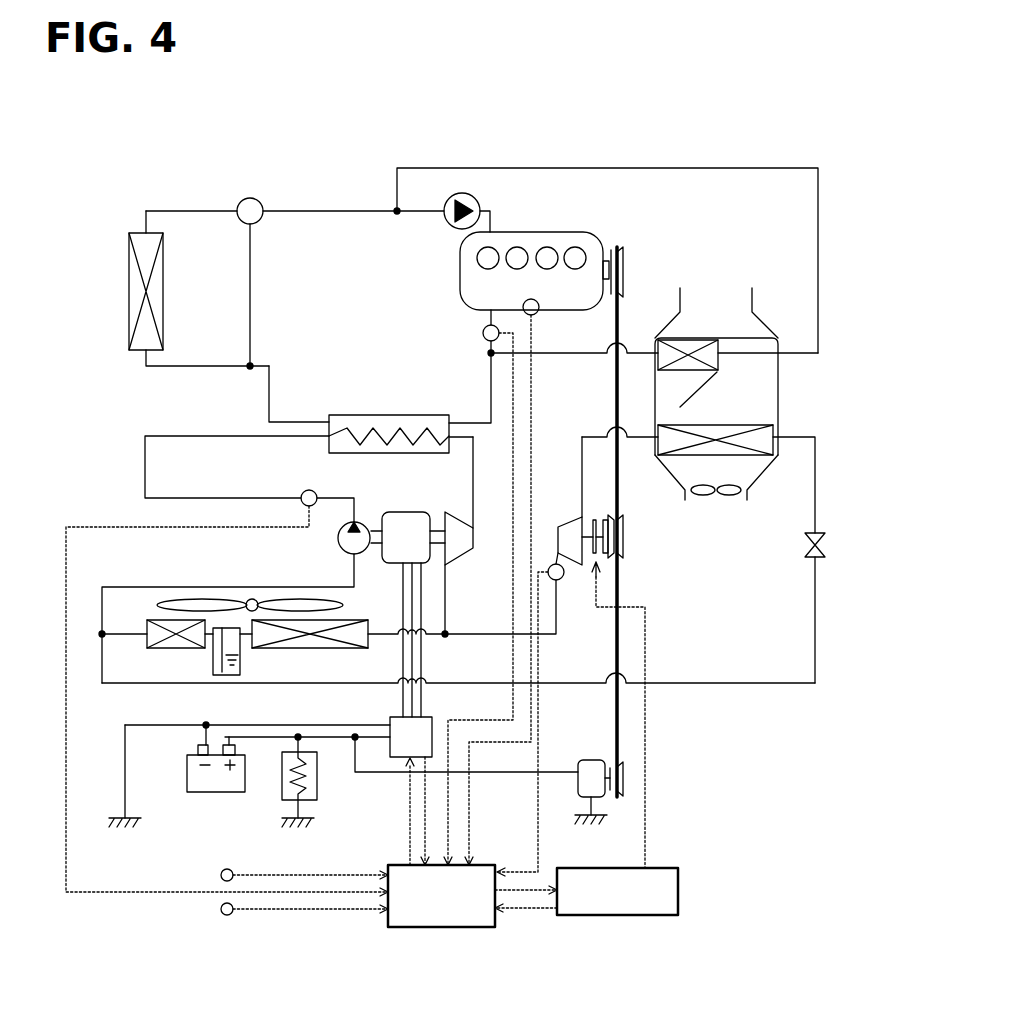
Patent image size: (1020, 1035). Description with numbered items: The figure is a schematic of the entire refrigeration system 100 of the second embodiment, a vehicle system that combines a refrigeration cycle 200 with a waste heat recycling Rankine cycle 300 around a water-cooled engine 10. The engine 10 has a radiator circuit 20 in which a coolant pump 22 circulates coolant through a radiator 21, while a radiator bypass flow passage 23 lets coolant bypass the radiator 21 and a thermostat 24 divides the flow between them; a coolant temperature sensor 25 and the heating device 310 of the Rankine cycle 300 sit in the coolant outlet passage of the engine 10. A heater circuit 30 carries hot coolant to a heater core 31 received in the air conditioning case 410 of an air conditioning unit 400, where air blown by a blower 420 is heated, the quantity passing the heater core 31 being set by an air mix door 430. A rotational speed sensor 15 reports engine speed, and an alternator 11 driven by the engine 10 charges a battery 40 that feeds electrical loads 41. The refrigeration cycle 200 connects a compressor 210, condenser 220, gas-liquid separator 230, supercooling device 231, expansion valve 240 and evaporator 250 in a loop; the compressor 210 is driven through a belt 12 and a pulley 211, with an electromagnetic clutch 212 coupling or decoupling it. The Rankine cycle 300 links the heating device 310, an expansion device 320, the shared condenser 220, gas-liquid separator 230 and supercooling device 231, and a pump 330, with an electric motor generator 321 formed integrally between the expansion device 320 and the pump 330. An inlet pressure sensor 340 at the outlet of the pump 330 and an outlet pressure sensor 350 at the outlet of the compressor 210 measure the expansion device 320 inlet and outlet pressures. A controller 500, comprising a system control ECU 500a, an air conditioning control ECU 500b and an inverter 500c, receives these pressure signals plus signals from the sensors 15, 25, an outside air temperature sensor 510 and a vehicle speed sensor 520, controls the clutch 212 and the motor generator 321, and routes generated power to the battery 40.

The engine 10 is at (460, 258).
The alternator 11 is at (588, 759).
The belt 12 is at (615, 372).
The rotational speed sensor 15 is at (535, 315).
The radiator circuit 20 is at (338, 205).
The radiator 21 is at (128, 284).
The coolant pump 22 is at (475, 194).
The radiator bypass flow passage 23 is at (253, 286).
The thermostat 24 is at (250, 198).
The coolant temperature sensor 25 is at (482, 333).
The heater circuit 30 is at (668, 162).
The heater core 31 is at (678, 340).
The battery 40 is at (200, 793).
The electrical loads 41 is at (318, 778).
The refrigeration system 100 is at (132, 434).
The refrigeration cycle 200 is at (575, 436).
The compressor 210 is at (566, 518).
The pulley 211 is at (624, 538).
The electromagnetic clutch 212 is at (600, 518).
The condenser 220 is at (320, 649).
The gas-liquid separator 230 is at (241, 662).
The supercooling device 231 is at (177, 650).
The expansion valve 240 is at (826, 540).
The evaporator 250 is at (748, 457).
The Rankine cycle 300 is at (193, 425).
The heating device 310 is at (388, 414).
The expansion device 320 is at (455, 511).
The electric motor generator 321 is at (398, 511).
The pump 330 is at (338, 548).
The inlet pressure sensor 340 is at (303, 492).
The outlet pressure sensor 350 is at (560, 582).
The air conditioning unit 400 is at (807, 373).
The air conditioning case 410 is at (778, 397).
The blower 420 is at (712, 497).
The air mix door 430 is at (698, 392).
The controller 500 is at (395, 839).
The system control ECU 500a is at (436, 929).
The air conditioning control ECU 500b is at (612, 917).
The inverter 500c is at (390, 717).
The outside air temperature sensor 510 is at (233, 915).
The vehicle speed sensor 520 is at (233, 870).